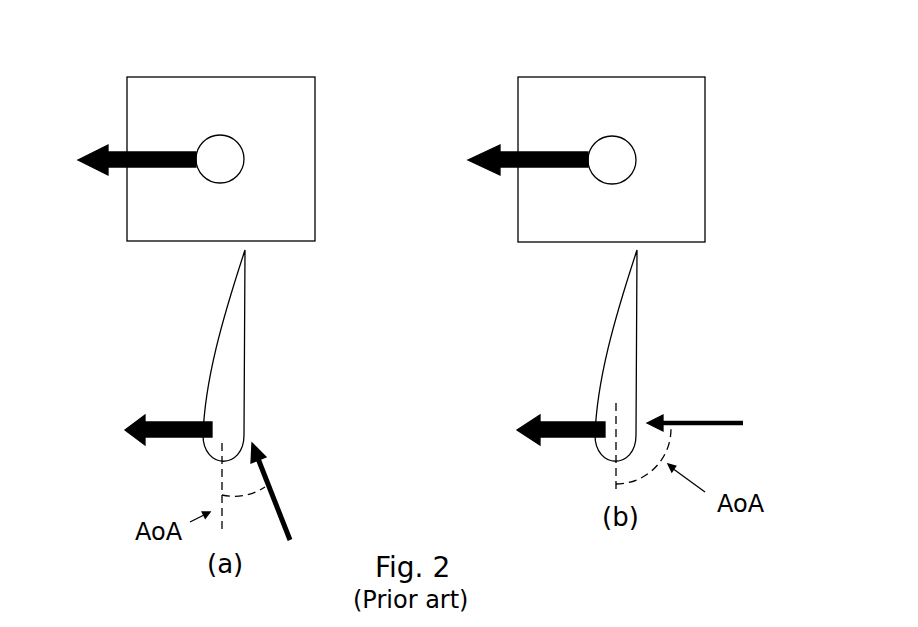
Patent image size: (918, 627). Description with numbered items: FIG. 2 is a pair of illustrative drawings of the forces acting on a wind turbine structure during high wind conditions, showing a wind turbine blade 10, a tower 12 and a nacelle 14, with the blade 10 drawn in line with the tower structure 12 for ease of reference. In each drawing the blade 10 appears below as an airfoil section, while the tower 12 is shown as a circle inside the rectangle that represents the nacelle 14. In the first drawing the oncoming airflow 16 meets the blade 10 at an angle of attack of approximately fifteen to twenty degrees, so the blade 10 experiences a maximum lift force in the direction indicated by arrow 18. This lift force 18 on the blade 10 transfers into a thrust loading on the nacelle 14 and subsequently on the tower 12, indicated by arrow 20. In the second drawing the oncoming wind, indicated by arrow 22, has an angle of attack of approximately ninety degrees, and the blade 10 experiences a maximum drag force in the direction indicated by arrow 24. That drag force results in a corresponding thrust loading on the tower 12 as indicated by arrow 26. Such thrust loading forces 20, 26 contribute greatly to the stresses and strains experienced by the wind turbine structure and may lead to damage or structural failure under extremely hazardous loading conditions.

The wind turbine blade 10 is at (223, 367).
The tower 12 is at (220, 135).
The nacelle 14 is at (127, 97).
The oncoming airflow 16 is at (286, 499).
The lift force 18 is at (168, 448).
The thrust loading 20 is at (137, 178).
The oncoming wind 22 is at (710, 427).
The drag force 24 is at (561, 448).
The thrust loading 26 is at (528, 178).